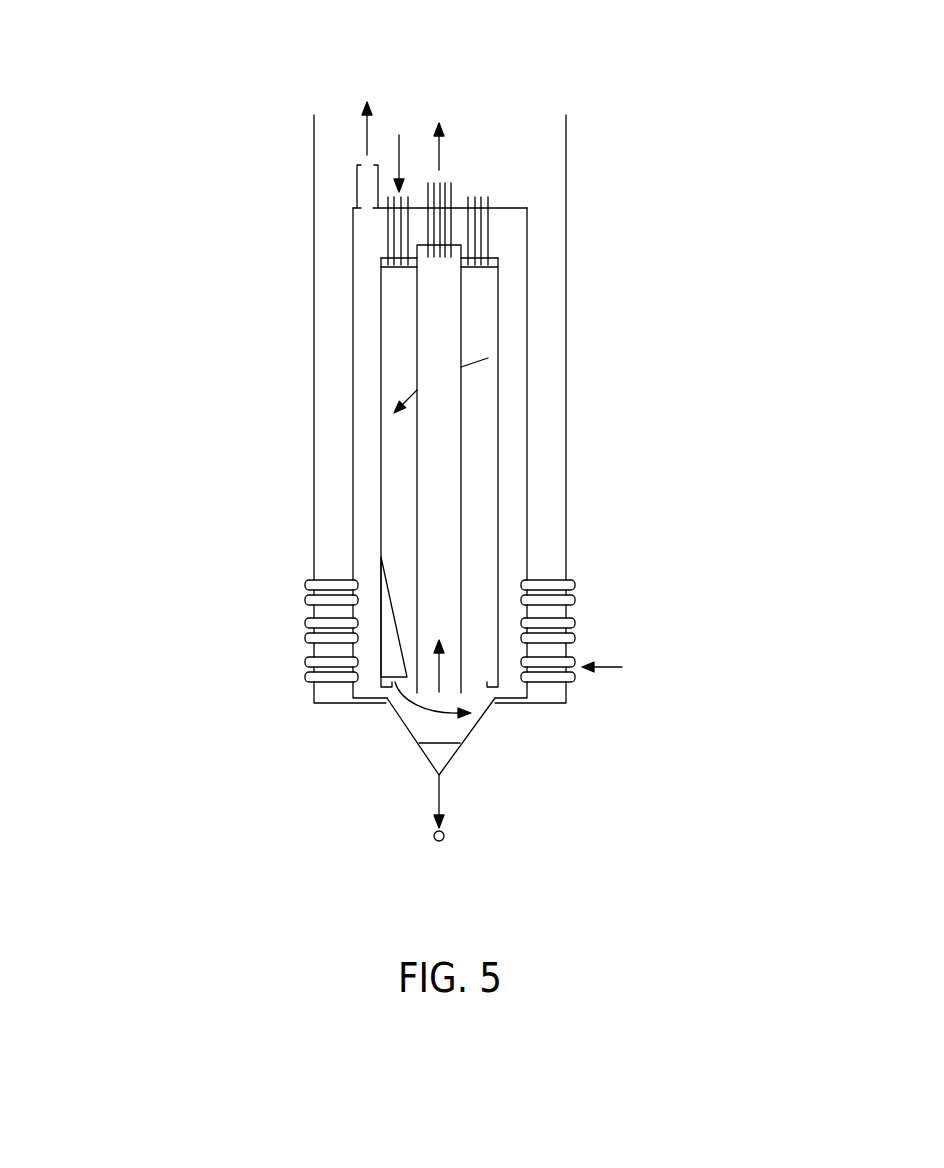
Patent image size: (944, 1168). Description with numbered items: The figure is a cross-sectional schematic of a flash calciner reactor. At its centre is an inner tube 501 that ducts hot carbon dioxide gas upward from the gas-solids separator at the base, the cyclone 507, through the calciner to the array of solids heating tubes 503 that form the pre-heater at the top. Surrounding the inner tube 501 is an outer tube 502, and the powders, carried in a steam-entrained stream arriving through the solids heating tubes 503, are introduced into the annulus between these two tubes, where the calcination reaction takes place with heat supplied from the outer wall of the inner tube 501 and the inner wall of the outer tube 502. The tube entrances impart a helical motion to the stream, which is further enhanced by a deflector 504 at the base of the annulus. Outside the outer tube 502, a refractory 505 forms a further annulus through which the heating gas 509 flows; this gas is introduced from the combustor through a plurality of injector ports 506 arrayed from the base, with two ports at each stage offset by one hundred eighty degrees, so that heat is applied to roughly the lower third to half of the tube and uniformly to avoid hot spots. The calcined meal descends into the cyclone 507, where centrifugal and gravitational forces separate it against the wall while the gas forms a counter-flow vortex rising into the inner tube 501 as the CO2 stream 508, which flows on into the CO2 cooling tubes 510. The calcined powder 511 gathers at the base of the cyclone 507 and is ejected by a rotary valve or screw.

The inner tube 501 is at (461, 467).
The outer tube 502 is at (498, 405).
The solids heating tubes 503 is at (488, 222).
The deflector 504 is at (378, 581).
The refractory 505 is at (566, 346).
The injector ports 506 is at (303, 583).
The cyclone 507 is at (472, 738).
The CO2 stream 508 is at (443, 682).
The heating gas 509 is at (362, 127).
The CO2 cooling tubes 510 is at (453, 193).
The calcined powder 511 is at (442, 804).